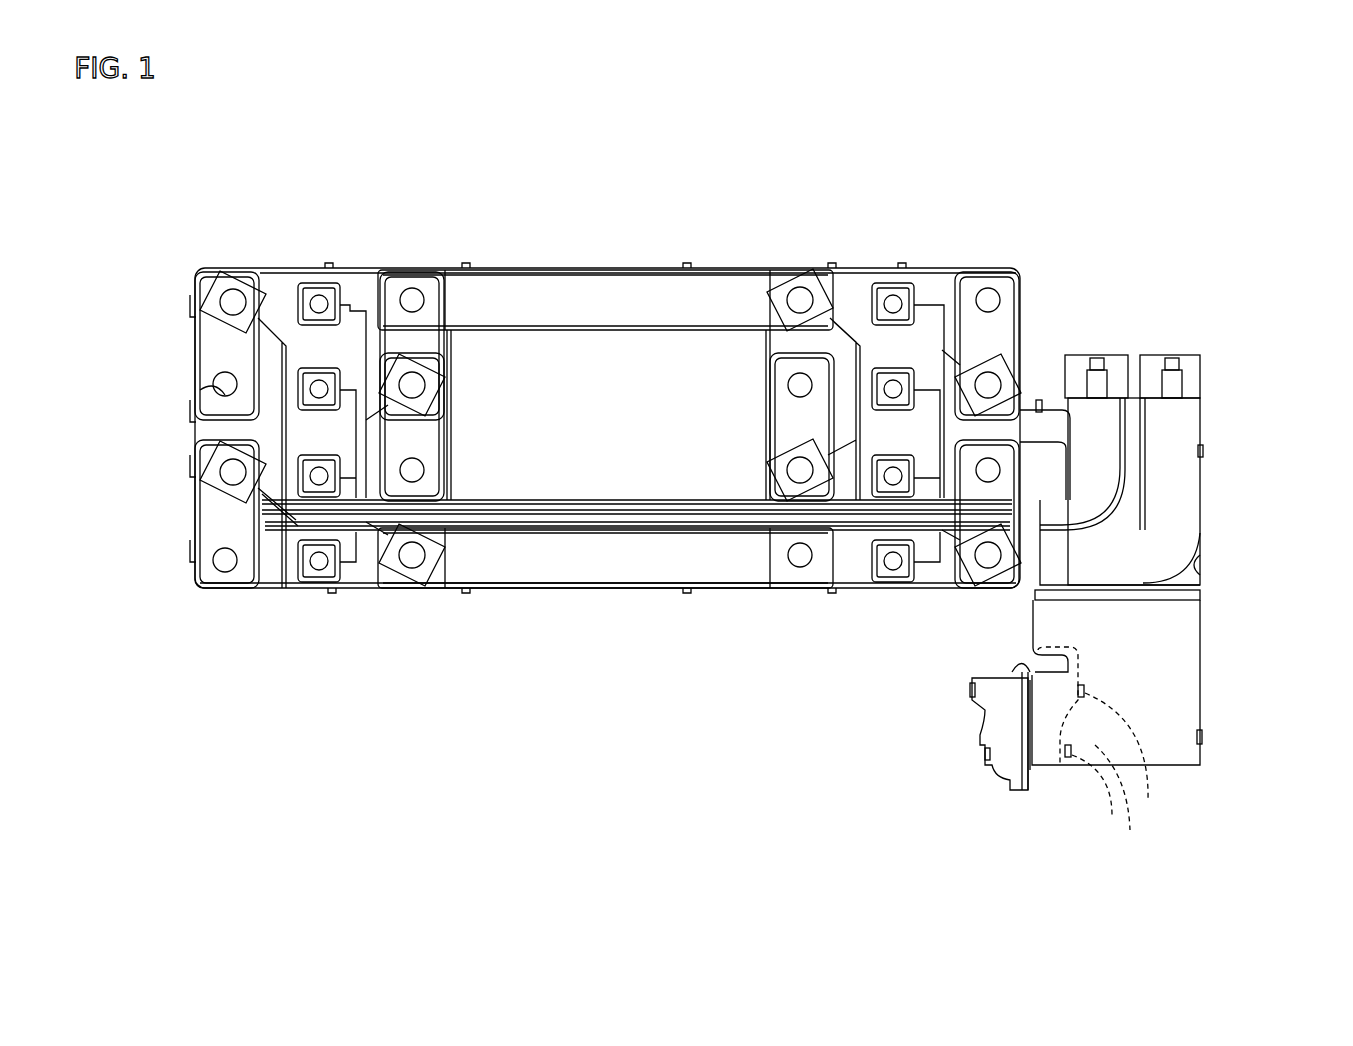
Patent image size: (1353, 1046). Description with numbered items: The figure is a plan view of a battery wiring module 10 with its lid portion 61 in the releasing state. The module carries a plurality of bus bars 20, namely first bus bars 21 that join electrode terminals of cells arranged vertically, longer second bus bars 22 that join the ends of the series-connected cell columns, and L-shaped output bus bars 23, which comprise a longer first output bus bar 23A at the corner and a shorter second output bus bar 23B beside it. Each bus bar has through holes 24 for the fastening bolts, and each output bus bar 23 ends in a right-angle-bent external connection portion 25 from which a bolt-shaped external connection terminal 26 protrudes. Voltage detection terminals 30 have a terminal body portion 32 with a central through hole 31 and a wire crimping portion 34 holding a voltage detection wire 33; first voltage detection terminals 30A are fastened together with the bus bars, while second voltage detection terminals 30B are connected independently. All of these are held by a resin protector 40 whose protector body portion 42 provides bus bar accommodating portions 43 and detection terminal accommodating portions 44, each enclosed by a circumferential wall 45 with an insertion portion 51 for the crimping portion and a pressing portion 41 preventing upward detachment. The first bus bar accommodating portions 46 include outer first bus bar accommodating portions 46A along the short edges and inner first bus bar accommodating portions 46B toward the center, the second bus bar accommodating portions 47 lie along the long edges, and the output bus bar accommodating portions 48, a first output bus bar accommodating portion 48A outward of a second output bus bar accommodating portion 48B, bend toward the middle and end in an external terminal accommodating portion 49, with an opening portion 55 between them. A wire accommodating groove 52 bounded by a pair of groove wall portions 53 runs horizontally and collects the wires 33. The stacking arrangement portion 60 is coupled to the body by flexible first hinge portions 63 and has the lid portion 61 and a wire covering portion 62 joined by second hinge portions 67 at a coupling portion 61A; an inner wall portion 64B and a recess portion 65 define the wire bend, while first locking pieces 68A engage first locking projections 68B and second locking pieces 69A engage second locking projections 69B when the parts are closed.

The battery wiring module 10 is at (677, 158).
The bus bar 20 is at (540, 296).
The first bus bar 21 is at (215, 345).
The second bus bar 22 is at (610, 280).
The output bus bar 23 is at (1278, 440).
The first output bus bar 23A is at (1185, 470).
The second output bus bar 23B is at (1095, 486).
The through hole 24 is at (800, 568).
The external connection portion 25 is at (1180, 398).
The external connection terminal 26 is at (1097, 356).
The voltage detection terminal 30 is at (322, 292).
The first voltage detection terminal 30A is at (208, 476).
The second voltage detection terminal 30B is at (322, 568).
The through hole 31 is at (218, 482).
The terminal body portion 32 is at (236, 542).
The voltage detection wire 33 is at (527, 508).
The wire crimping portion 34 is at (284, 594).
The resin protector 40 is at (362, 324).
The pressing portion 41 is at (418, 382).
The protector body portion 42 is at (855, 282).
The bus bar accommodating portion 43 is at (205, 398).
The detection terminal accommodating portion 44 is at (298, 292).
The circumferential wall 45 is at (490, 345).
The first bus bar accommodating portion 46 is at (228, 792).
The outer first bus bar accommodating portion 46A is at (226, 472).
The inner first bus bar accommodating portion 46B is at (412, 482).
The second bus bar accommodating portion 47 is at (692, 505).
The output bus bar accommodating portion 48 is at (1278, 522).
The first output bus bar accommodating portion 48A is at (1198, 568).
The second output bus bar accommodating portion 48B is at (1098, 520).
The external terminal accommodating portion 49 is at (1155, 362).
The insertion portion 51 is at (215, 340).
The wire accommodating groove 52 is at (598, 512).
The groove wall portion 53 is at (702, 508).
The opening portion 55 is at (998, 580).
The stacking arrangement portion 60 is at (1174, 762).
The lid portion 61 is at (1188, 758).
The coupling portion 61A is at (1046, 722).
The wire covering portion 62 is at (995, 735).
The first hinge portion 63 is at (1150, 596).
The inner wall portion 64B is at (1153, 806).
The recess portion 65 is at (1030, 660).
The second hinge portion 67 is at (1023, 672).
The first locking piece 68A is at (1203, 735).
The first locking projection 68B is at (1040, 400).
The second locking piece 69A is at (968, 690).
The second locking projection 69B is at (1121, 759).